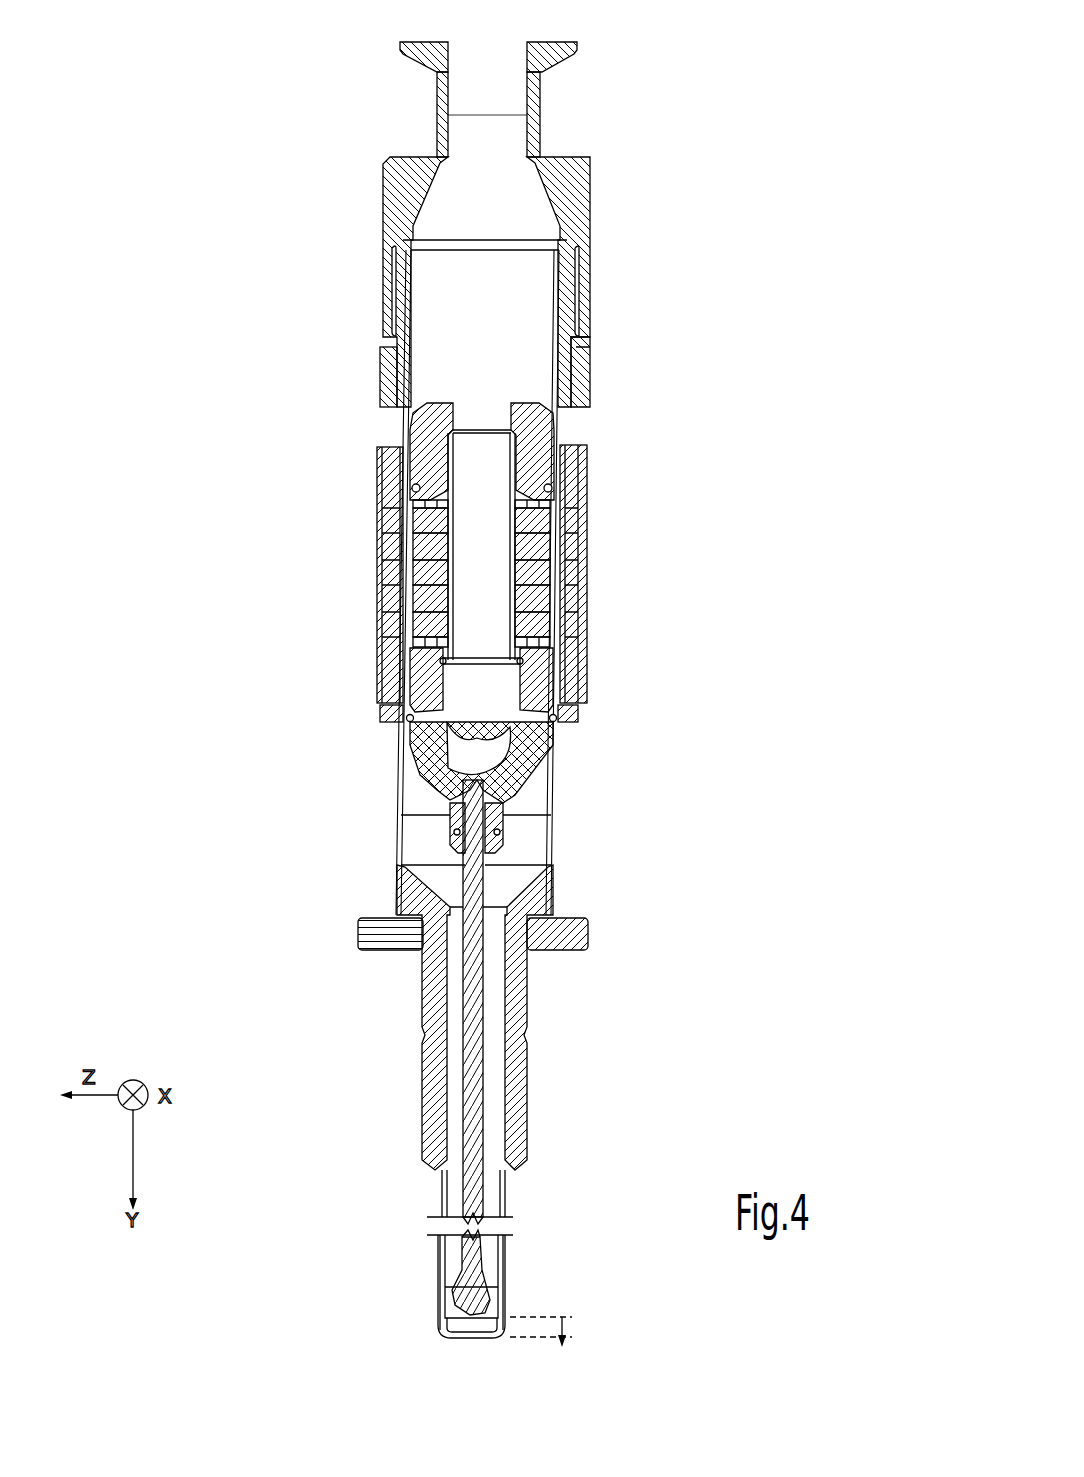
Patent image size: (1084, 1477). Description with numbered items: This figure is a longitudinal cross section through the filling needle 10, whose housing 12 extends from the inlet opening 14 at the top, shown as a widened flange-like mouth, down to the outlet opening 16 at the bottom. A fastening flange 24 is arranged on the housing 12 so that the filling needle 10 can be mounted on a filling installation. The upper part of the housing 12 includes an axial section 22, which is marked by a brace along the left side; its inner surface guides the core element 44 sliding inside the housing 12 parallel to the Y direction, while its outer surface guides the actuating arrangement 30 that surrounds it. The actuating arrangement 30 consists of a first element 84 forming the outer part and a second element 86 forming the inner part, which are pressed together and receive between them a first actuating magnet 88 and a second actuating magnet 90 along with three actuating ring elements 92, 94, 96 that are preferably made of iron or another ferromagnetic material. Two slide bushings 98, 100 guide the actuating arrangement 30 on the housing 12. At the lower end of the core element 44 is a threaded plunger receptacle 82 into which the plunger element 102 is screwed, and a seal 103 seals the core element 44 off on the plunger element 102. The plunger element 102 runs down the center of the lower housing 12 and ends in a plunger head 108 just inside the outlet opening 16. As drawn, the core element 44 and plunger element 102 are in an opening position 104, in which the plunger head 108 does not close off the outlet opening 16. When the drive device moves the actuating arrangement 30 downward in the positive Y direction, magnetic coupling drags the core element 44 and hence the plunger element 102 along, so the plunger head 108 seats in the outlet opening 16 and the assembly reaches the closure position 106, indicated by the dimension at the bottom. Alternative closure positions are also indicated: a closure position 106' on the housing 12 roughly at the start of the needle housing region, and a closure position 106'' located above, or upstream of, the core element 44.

The filling needle 10 is at (777, 182).
The housing 12 is at (575, 180).
The inlet opening 14 is at (452, 38).
The outlet opening 16 is at (458, 1345).
The axial section 22 is at (272, 890).
The fastening flange 24 is at (577, 368).
The actuating arrangement 30 is at (585, 467).
The core element 44 is at (430, 383).
The plunger receptacle 82 is at (480, 787).
The first element 84 is at (583, 490).
The second element 86 is at (573, 687).
The first actuating magnet 88 is at (572, 600).
The second actuating magnet 90 is at (570, 547).
The actuating ring element 92 is at (570, 625).
The actuating ring element 94 is at (572, 573).
The actuating ring element 96 is at (572, 523).
The slide bushing 98 is at (572, 715).
The slide bushing 100 is at (575, 442).
The plunger element 102 is at (487, 1006).
The seal 103 is at (468, 825).
The opening position 104 is at (520, 1297).
The closure position 106 is at (603, 1300).
The closure position 106' is at (609, 873).
The closure position 106'' is at (637, 240).
The plunger head 108 is at (455, 1302).